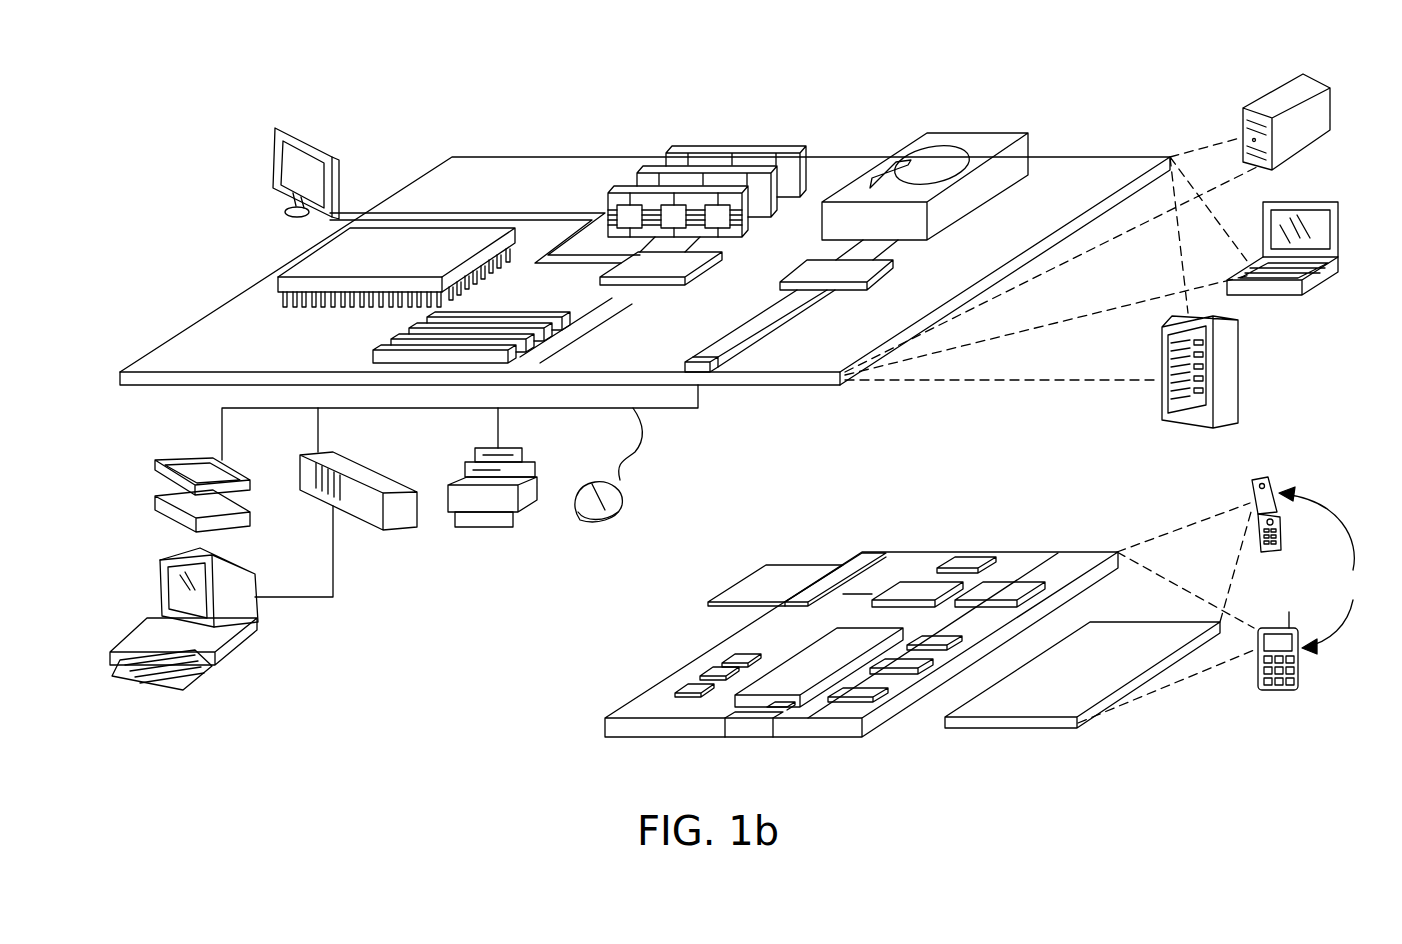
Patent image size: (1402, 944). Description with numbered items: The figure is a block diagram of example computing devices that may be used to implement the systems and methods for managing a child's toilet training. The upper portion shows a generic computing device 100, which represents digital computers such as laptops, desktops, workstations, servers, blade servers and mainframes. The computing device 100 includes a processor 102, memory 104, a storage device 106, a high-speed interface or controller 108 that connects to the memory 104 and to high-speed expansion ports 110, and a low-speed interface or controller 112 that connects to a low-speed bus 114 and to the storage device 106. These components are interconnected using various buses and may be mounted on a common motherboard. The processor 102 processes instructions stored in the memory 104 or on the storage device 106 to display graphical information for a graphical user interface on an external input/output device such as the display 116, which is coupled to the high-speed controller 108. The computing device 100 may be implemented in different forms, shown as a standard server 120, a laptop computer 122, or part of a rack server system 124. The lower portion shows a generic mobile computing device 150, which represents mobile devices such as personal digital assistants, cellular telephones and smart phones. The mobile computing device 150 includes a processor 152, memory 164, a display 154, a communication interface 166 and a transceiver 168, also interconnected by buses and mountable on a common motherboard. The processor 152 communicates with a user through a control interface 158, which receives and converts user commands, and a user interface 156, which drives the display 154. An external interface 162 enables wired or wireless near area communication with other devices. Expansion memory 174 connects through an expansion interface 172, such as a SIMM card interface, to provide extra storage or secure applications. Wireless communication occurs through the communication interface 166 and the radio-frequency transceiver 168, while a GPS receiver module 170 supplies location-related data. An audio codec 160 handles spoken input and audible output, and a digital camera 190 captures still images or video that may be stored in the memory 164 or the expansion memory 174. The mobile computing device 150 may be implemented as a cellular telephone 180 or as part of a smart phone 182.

The computing device 100 is at (406, 108).
The processor 102 is at (302, 260).
The memory 104 is at (738, 150).
The storage device 106 is at (967, 132).
The high-speed interface or controller 108 is at (675, 263).
The high-speed expansion ports 110 is at (398, 337).
The low-speed interface or controller 112 is at (815, 268).
The low-speed bus 114 is at (703, 357).
The display 116 is at (280, 128).
The standard server 120 is at (1262, 100).
The laptop computer 122 is at (1317, 202).
The rack server system 124 is at (1238, 372).
The mobile computing device 150 is at (570, 743).
The processor 152 is at (788, 673).
The display 154 is at (1121, 642).
The user interface 156 is at (866, 696).
The control interface 158 is at (918, 662).
The audio codec 160 is at (927, 644).
The external interface 162 is at (758, 730).
The memory 164 is at (705, 675).
The communication interface 166 is at (918, 585).
The transceiver 168 is at (1006, 586).
The GPS receiver module 170 is at (964, 558).
The expansion interface 172 is at (845, 562).
The expansion memory 174 is at (763, 566).
The cellular telephone 180 is at (1258, 478).
The smart phone 182 is at (1266, 626).
The digital camera 190 is at (1328, 570).